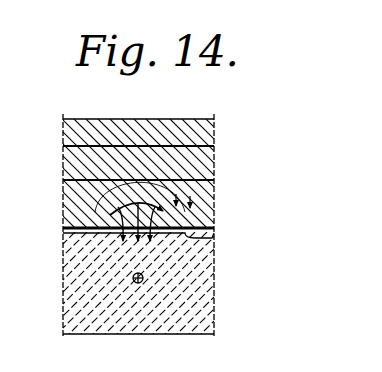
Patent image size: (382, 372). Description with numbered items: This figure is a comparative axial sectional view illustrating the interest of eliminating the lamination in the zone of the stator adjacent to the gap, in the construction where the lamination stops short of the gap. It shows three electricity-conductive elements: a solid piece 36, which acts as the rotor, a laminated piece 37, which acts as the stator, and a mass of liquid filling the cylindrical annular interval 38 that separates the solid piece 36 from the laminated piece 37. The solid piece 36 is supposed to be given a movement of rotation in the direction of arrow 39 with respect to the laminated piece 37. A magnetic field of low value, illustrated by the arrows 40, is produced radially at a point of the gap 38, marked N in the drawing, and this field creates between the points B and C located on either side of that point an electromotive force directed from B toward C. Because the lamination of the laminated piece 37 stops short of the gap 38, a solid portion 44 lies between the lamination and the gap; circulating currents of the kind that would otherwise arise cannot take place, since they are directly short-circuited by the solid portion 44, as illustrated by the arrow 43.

The solid piece 36 is at (210, 303).
The laminated piece 37 is at (215, 122).
The cylindrical annular interval 38 is at (216, 227).
The arrow 39 is at (134, 279).
The arrows 40 is at (140, 246).
The arrow 43 is at (168, 207).
The solid portion 44 is at (66, 210).
The point B is at (96, 234).
The point C is at (208, 236).
The point N is at (131, 257).